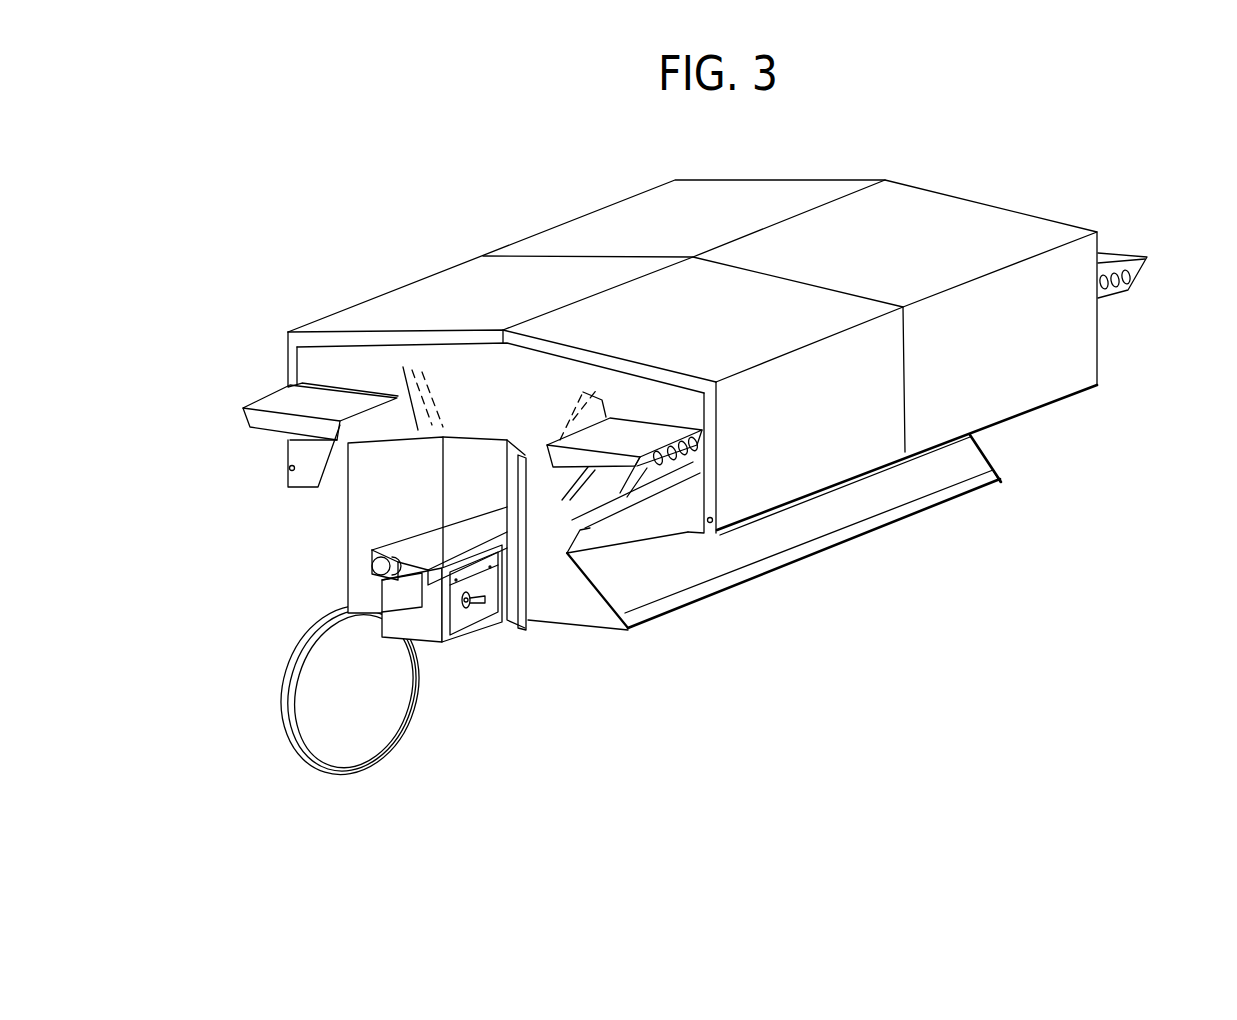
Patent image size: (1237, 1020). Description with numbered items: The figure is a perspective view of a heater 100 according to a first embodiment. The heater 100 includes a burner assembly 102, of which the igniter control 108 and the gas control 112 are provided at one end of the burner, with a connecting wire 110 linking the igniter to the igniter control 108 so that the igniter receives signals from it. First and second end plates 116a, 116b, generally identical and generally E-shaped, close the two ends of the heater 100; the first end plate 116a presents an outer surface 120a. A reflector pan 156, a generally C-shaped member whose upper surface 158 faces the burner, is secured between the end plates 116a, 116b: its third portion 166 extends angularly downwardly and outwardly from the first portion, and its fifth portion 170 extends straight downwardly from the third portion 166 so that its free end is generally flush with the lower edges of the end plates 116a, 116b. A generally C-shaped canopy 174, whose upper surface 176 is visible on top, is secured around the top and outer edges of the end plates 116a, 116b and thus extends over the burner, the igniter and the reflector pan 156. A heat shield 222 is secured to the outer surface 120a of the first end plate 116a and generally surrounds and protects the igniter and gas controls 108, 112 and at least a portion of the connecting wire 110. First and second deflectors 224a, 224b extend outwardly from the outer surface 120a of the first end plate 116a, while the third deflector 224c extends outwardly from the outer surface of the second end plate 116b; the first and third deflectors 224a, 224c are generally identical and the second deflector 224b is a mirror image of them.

The heater 100 is at (1018, 168).
The burner assembly 102 is at (437, 660).
The igniter control 108 is at (463, 625).
The connecting wire 110 is at (295, 743).
The gas control 112 is at (390, 600).
The first end plate 116a is at (553, 592).
The second end plate 116b is at (1010, 477).
The outer surface of first end plate 120a is at (525, 397).
The reflector pan 156 is at (692, 566).
The upper surface of reflector pan 158 is at (670, 567).
The third portion of reflector pan 166 is at (958, 463).
The fifth portion of reflector pan 170 is at (836, 537).
The canopy 174 is at (744, 200).
The upper surface of canopy 176 is at (885, 258).
The heat shield 222 is at (373, 477).
The first deflector 224a is at (614, 438).
The second deflector 224b is at (296, 404).
The third deflector 224c is at (1128, 252).